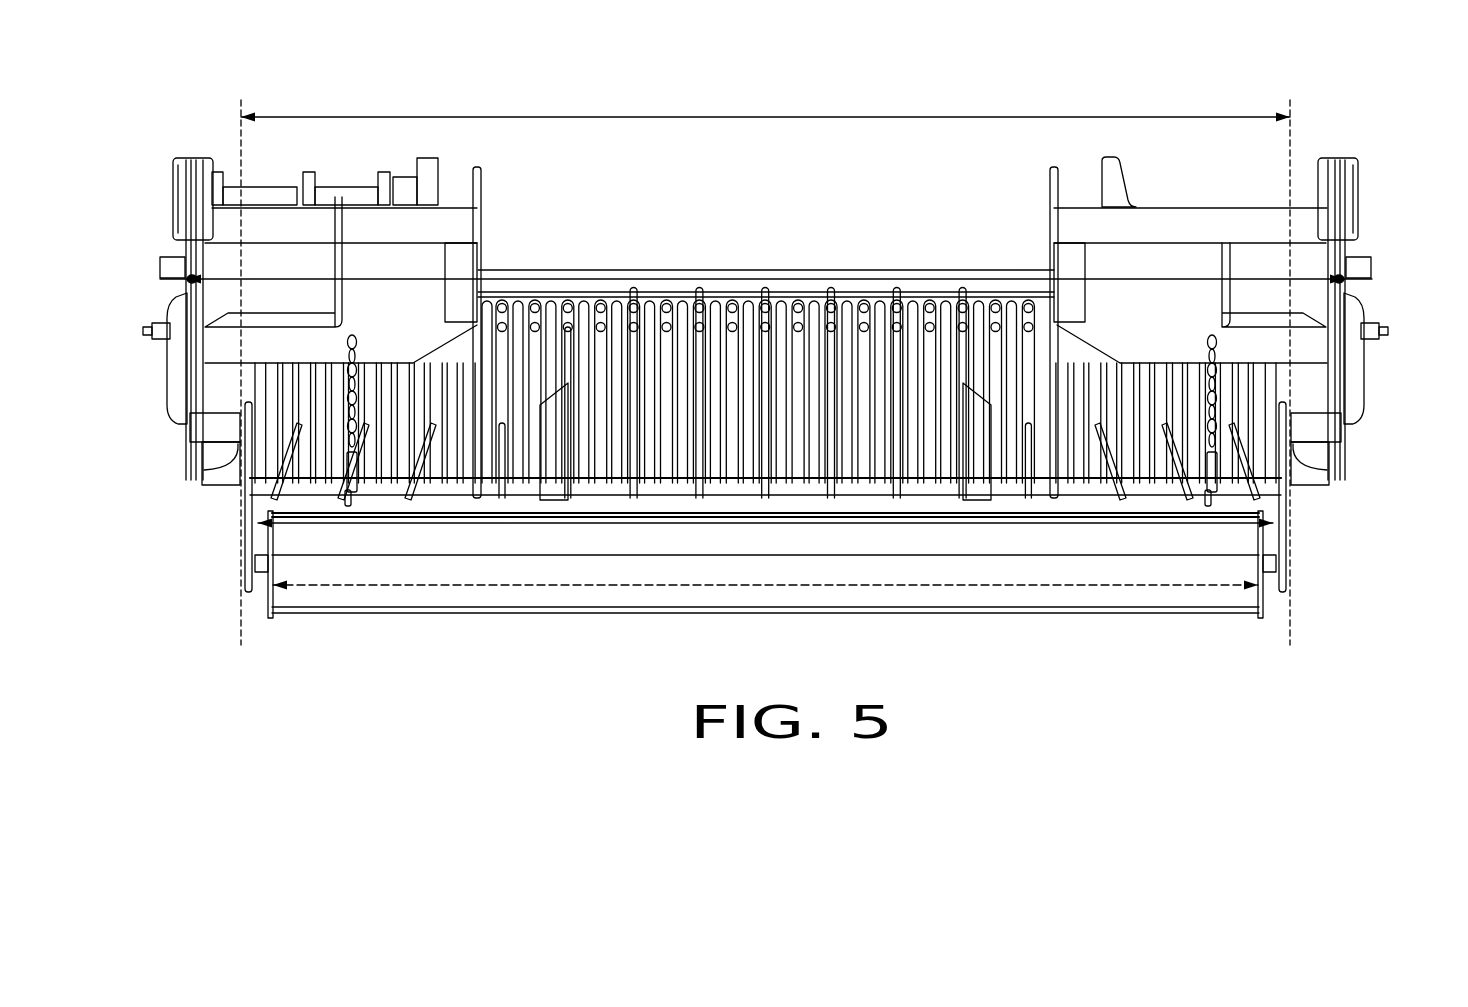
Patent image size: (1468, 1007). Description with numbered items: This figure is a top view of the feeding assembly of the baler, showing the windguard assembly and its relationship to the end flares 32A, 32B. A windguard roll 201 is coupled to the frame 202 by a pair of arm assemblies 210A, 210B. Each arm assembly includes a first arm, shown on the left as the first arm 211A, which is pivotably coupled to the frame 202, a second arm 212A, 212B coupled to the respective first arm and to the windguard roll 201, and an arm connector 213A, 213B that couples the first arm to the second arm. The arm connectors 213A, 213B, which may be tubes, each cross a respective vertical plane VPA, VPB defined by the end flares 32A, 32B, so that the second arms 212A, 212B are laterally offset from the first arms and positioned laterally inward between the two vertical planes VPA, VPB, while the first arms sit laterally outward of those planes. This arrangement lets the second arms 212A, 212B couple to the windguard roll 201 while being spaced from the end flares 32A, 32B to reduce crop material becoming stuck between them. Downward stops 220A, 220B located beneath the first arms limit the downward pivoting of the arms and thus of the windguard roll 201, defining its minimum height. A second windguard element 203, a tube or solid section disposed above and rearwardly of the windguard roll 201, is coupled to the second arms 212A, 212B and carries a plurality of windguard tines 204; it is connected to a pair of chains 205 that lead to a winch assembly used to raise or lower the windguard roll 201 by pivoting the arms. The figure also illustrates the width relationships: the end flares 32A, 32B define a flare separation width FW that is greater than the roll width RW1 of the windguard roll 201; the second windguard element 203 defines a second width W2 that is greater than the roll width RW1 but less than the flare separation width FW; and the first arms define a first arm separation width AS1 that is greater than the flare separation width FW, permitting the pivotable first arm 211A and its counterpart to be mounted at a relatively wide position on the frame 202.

The windguard roll 201 is at (1052, 594).
The frame 202 is at (1342, 237).
The second windguard element 203 is at (930, 505).
The windguard tines 204 is at (798, 330).
The chains 205 is at (355, 348).
The arm assembly 210A is at (195, 497).
The arm assembly 210B is at (1330, 497).
The first arm 211A is at (187, 290).
The second arm 212A is at (266, 445).
The second arm 212B is at (1250, 462).
The arm connector 213A is at (203, 432).
The arm connector 213B is at (1322, 433).
The downward stop 220A is at (175, 386).
The downward stop 220B is at (1350, 388).
The end flare 32A is at (233, 475).
The end flare 32B is at (1295, 488).
The first arm separation width AS1 is at (870, 280).
The flare separation width FW is at (770, 115).
The vertical plane VPA is at (243, 110).
The vertical plane VPB is at (1293, 622).
The second width W2 is at (745, 525).
The roll width RW1 is at (728, 587).